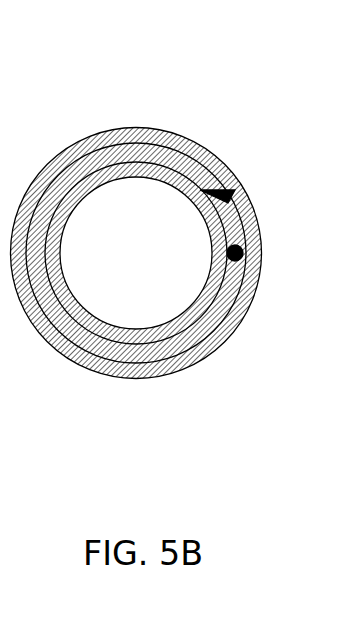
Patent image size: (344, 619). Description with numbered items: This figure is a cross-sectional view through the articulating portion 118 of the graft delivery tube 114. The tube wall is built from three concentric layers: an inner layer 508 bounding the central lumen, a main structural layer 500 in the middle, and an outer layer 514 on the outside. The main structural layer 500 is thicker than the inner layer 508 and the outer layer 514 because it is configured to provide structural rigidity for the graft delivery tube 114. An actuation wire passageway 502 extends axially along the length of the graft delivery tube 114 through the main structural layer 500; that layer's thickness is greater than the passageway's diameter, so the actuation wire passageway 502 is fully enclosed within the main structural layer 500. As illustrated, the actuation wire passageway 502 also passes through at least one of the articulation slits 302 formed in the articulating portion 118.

The graft delivery tube 114 is at (88, 122).
The articulating portion 118 is at (142, 98).
The main structural layer 500 is at (173, 160).
The outer layer 514 is at (208, 352).
The inner layer 508 is at (133, 330).
The articulation slits 302 is at (228, 200).
The actuation wire passageway 502 is at (240, 247).